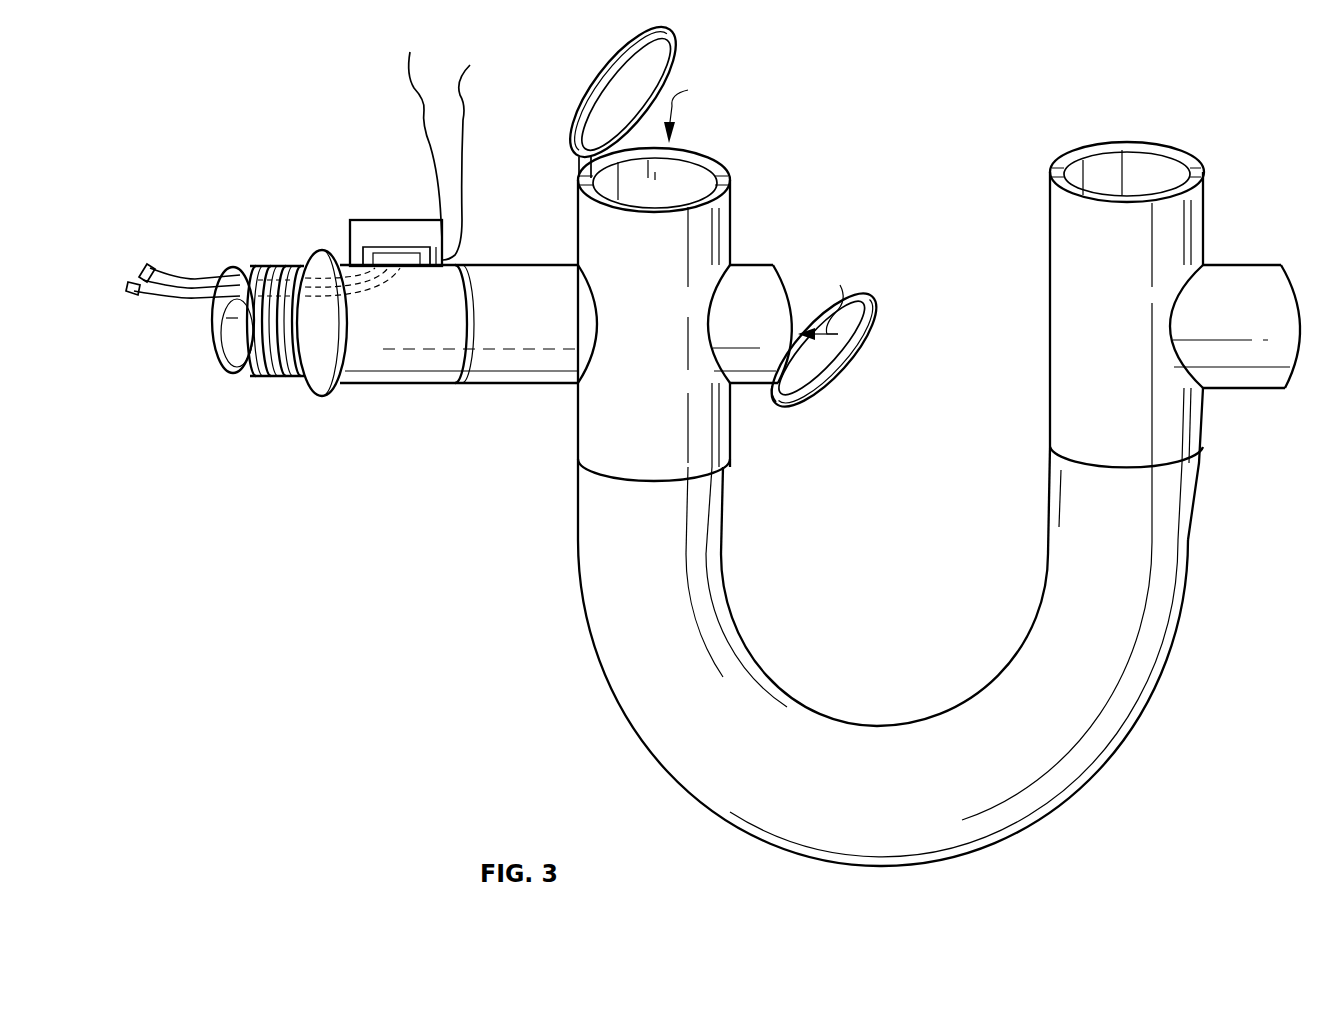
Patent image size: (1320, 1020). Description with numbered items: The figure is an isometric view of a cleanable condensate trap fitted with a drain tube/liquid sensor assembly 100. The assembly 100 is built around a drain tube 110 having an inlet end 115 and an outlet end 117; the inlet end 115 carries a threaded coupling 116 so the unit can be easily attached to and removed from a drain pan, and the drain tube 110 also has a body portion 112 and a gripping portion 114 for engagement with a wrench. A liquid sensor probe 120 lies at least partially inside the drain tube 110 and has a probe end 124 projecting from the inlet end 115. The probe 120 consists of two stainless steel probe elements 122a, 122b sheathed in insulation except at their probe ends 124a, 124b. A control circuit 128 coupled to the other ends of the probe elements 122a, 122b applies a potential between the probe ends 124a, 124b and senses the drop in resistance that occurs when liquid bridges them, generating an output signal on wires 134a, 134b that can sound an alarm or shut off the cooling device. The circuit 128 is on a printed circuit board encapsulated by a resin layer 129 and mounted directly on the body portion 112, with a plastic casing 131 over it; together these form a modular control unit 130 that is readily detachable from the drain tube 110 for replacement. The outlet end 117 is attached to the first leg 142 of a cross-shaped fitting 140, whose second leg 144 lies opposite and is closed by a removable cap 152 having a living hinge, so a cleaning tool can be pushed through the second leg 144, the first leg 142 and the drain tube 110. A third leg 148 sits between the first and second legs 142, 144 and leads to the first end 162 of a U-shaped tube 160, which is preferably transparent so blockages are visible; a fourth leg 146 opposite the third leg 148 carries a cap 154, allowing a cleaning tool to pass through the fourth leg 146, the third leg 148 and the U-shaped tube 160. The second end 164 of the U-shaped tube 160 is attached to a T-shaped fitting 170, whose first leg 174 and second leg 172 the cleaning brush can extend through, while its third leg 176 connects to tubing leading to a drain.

The drain tube/liquid sensor assembly 100 is at (288, 134).
The drain tube 110 is at (347, 383).
The body portion 112 is at (418, 340).
The gripping portion 114 is at (316, 392).
The inlet end 115 is at (215, 372).
The threaded coupling 116 is at (254, 372).
The outlet end 117 is at (454, 383).
The liquid sensor probe 120 is at (157, 274).
The probe element 122a is at (178, 298).
The probe element 122b is at (178, 278).
The probe end 124 is at (102, 274).
The probe end 124a is at (128, 292).
The probe end 124b is at (141, 263).
The control circuit 128 is at (377, 242).
The resin layer 129 is at (443, 258).
The modular control unit 130 is at (399, 145).
The casing 131 is at (400, 220).
The wire 134a is at (418, 132).
The wire 134b is at (482, 154).
The cross-shaped fitting 140 is at (741, 256).
The first leg 142 is at (500, 372).
The second leg 144 is at (760, 277).
The fourth leg 146 is at (730, 220).
The third leg 148 is at (730, 447).
The removable cap 152 is at (850, 370).
The cap 154 is at (649, 28).
The U-shaped tube 160 is at (869, 627).
The first end 162 is at (578, 483).
The second end 164 is at (1190, 463).
The T-shaped fitting 170 is at (1133, 304).
The second leg 172 is at (1190, 217).
The first leg 174 is at (1185, 435).
The third leg 176 is at (1247, 277).